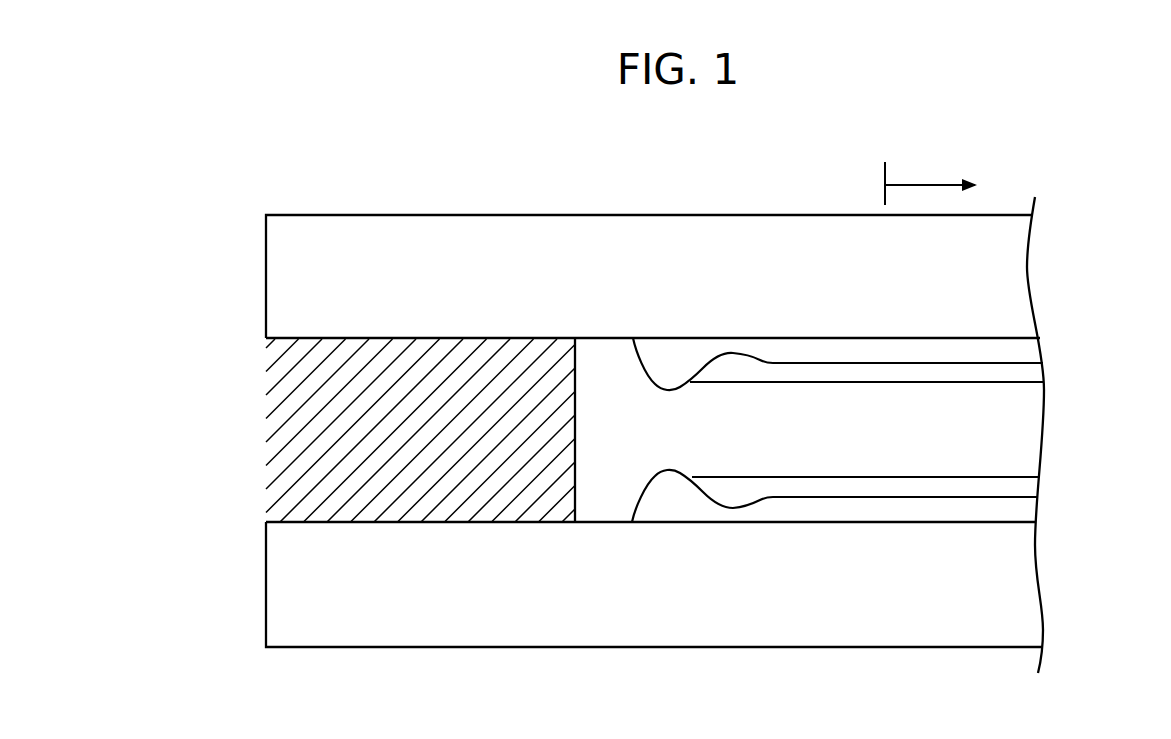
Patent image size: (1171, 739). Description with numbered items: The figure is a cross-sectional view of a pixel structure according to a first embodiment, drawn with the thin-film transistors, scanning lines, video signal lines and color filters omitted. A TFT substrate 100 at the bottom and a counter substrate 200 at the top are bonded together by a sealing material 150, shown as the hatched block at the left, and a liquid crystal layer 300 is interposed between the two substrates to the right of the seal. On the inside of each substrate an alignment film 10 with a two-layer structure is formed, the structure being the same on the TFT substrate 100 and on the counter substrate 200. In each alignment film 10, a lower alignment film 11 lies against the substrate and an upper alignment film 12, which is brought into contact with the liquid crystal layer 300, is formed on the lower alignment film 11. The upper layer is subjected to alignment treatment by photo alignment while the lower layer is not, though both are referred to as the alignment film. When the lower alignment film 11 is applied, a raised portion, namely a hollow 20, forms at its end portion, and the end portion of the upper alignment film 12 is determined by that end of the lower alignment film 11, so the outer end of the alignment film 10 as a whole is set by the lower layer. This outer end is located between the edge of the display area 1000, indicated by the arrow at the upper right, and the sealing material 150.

The TFT substrate 100 is at (291, 599).
The counter substrate 200 is at (291, 275).
The sealing material 150 is at (291, 441).
The hollow 20 is at (670, 390).
The alignment film 10 is at (1094, 323).
The lower alignment film 11 is at (1032, 349).
The upper alignment film 12 is at (1036, 372).
The liquid crystal layer 300 is at (1027, 432).
The display area 1000 is at (931, 178).